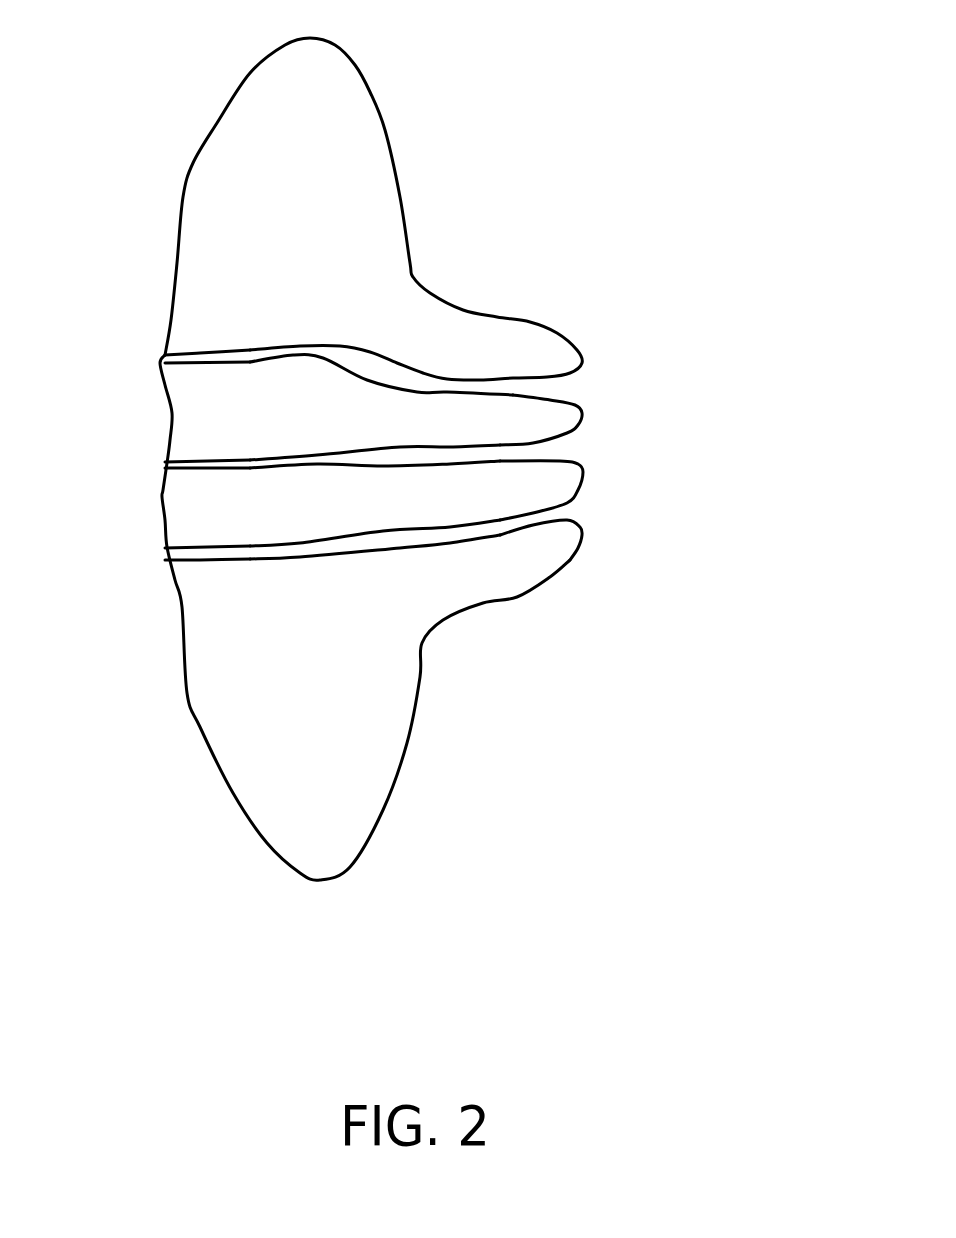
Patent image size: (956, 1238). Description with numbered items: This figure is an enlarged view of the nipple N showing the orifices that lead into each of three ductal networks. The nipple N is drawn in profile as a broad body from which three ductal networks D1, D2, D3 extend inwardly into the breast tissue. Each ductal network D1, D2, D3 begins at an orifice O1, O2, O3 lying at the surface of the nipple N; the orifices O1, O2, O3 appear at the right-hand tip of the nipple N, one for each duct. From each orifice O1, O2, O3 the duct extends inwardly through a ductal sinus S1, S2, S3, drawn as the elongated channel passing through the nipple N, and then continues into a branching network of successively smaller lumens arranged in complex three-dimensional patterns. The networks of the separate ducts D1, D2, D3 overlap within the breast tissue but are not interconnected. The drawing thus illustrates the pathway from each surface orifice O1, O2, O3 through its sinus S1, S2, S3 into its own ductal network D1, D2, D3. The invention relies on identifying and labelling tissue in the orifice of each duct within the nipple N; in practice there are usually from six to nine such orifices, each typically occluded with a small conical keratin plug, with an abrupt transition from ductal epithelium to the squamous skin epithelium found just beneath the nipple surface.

The nipple N is at (598, 472).
The first ductal network D1 is at (172, 538).
The second ductal network D2 is at (167, 462).
The third ductal network D3 is at (175, 354).
The first ductal sinus S1 is at (398, 540).
The second ductal sinus S2 is at (410, 458).
The third ductal sinus S3 is at (380, 372).
The first orifice O1 is at (567, 507).
The second orifice O2 is at (567, 447).
The third orifice O3 is at (567, 385).